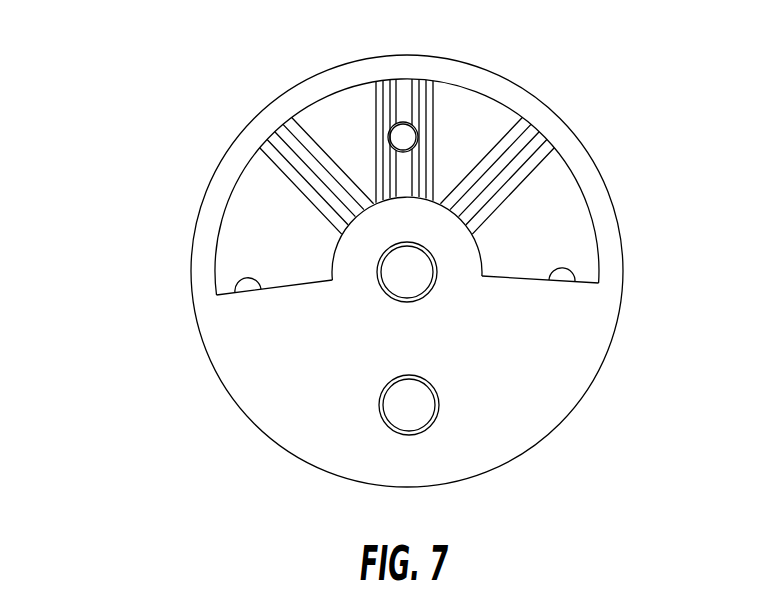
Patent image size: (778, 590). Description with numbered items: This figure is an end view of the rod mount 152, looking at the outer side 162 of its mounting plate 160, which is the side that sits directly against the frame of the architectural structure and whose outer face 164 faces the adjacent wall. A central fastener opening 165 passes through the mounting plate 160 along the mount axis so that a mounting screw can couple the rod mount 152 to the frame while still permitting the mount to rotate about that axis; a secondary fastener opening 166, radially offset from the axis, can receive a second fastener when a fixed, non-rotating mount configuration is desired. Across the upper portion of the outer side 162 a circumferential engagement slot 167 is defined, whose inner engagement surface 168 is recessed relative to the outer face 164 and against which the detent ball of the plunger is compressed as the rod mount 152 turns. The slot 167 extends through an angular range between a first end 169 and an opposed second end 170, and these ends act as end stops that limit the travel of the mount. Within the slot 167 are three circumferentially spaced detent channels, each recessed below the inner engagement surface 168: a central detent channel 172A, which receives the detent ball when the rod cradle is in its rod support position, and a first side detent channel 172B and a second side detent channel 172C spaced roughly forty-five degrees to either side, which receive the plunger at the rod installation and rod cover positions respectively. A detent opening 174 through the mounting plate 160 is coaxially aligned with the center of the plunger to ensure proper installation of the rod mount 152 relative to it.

The rod mount 152 is at (146, 66).
The mounting plate 160 is at (178, 260).
The outer side 162 is at (563, 366).
The outer face 164 is at (531, 433).
The central fastener opening 165 is at (402, 280).
The secondary fastener opening 166 is at (402, 426).
The circumferential engagement slot 167 is at (562, 228).
The inner engagement surface 168 is at (240, 228).
The first end 169 is at (236, 292).
The second end 170 is at (566, 283).
The central detent channel 172A is at (408, 100).
The first side detent channel 172B is at (528, 144).
The second side detent channel 172C is at (290, 156).
The detent opening 174 is at (394, 140).